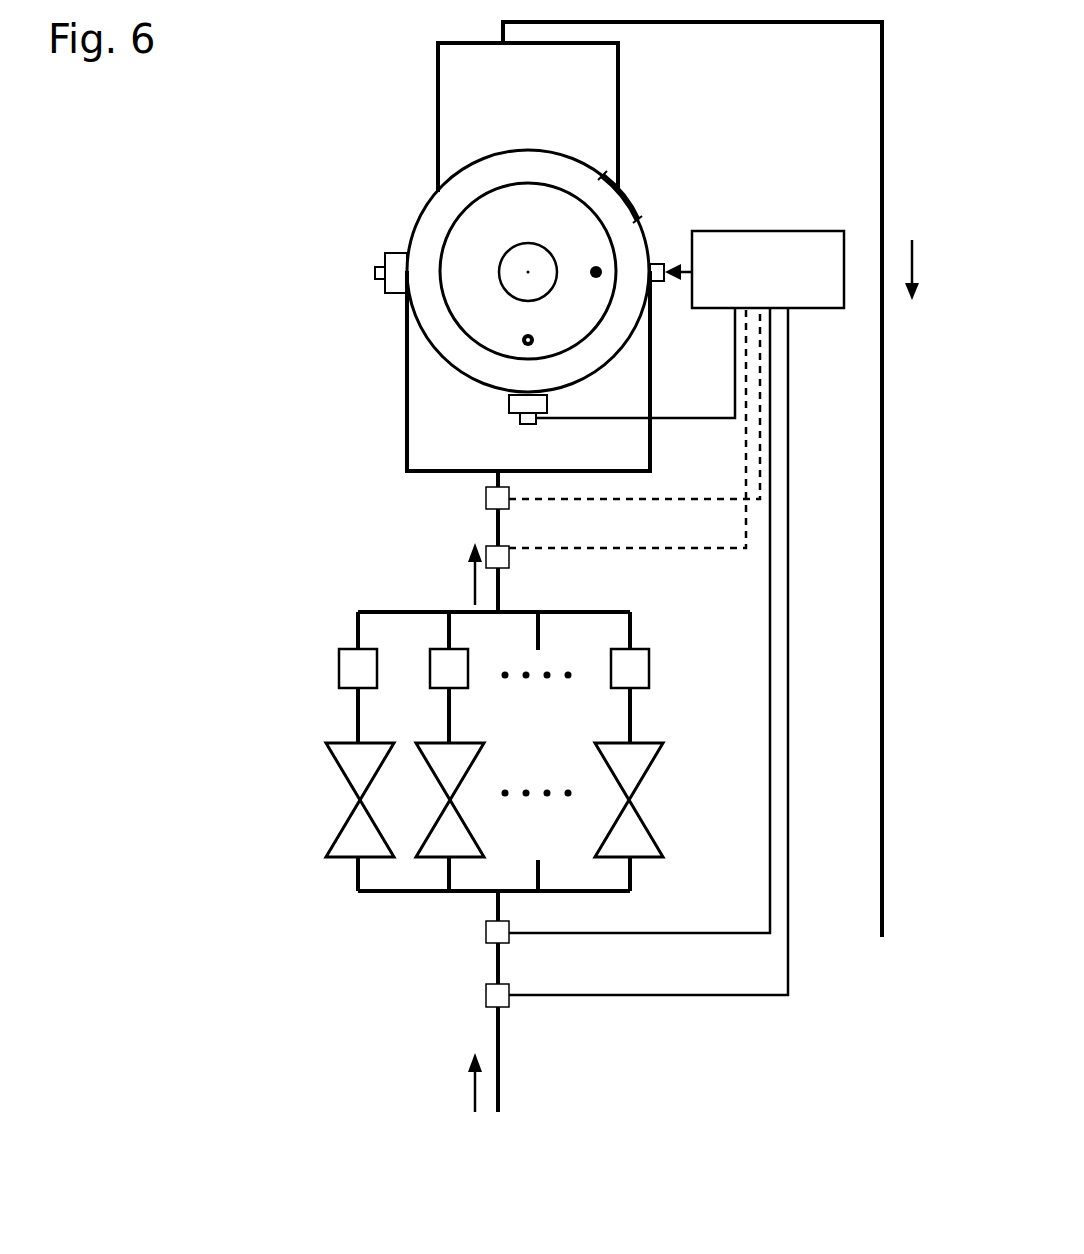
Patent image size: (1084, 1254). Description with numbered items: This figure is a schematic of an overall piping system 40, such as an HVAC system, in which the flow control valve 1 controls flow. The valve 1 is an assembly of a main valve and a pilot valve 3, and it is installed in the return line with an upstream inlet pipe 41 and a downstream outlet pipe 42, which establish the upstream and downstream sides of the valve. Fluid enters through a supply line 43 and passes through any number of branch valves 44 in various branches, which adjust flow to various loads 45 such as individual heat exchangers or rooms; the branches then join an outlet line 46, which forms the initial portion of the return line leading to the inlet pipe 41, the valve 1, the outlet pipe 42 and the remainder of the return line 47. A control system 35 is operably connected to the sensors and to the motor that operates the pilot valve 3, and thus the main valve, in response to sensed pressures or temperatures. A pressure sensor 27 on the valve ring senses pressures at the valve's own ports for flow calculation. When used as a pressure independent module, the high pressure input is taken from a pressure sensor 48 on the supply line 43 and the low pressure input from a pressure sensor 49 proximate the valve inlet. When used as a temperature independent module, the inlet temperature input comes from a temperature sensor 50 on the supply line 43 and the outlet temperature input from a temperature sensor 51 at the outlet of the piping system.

The flow control valve 1 is at (664, 215).
The pilot valve 3 is at (659, 283).
The pressure sensor 27 is at (509, 408).
The control system 35 is at (758, 231).
The piping system 40 is at (442, 756).
The upstream inlet pipe 41 is at (650, 450).
The downstream outlet pipe 42 is at (618, 58).
The supply line 43 is at (500, 1090).
The branch valves 44 is at (337, 860).
The loads 45 is at (348, 650).
The outlet line 46 is at (498, 587).
The return line 47 is at (882, 445).
The pressure sensor 48 is at (509, 1003).
The pressure sensor 49 is at (509, 557).
The temperature sensor 50 is at (509, 940).
The temperature sensor 51 is at (509, 505).